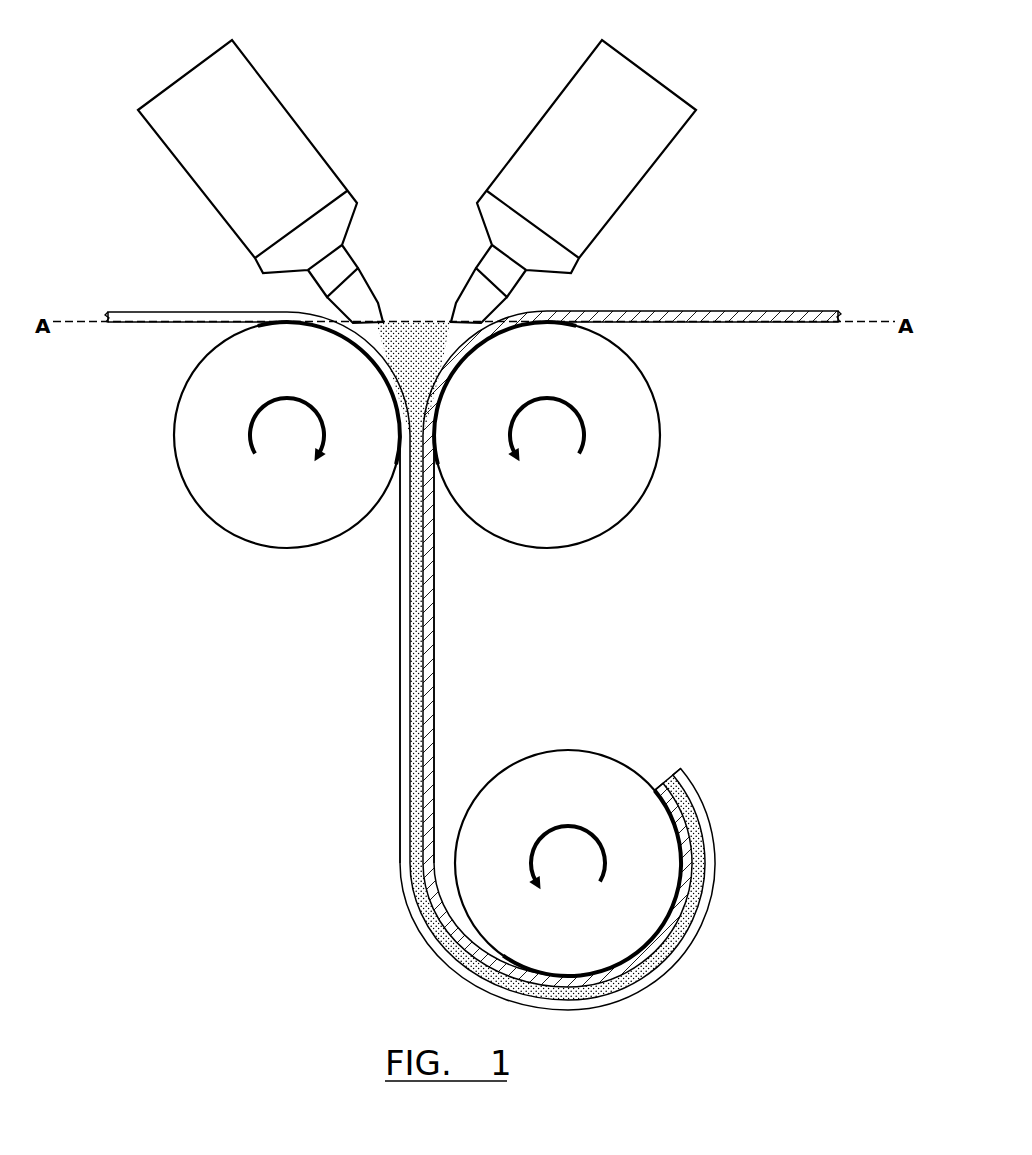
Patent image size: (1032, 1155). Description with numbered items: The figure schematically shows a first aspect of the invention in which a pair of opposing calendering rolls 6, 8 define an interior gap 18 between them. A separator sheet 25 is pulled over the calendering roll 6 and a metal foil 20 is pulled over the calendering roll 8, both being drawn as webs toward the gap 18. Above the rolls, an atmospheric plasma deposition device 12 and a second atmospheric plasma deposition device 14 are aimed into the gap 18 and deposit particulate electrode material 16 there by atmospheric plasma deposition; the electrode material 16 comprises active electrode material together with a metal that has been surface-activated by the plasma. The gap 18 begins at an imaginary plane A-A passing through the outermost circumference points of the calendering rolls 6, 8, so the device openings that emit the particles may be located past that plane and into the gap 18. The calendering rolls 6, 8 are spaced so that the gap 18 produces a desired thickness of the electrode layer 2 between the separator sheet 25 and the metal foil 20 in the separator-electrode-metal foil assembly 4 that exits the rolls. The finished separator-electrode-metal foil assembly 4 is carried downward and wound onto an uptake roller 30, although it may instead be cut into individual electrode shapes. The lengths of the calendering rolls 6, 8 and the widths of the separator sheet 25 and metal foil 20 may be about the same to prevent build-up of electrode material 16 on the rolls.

The electrode layer 2 is at (676, 767).
The separator-electrode-metal foil assembly 4 is at (394, 651).
The calendering roll 6 is at (175, 460).
The calendering roll 8 is at (659, 460).
The atmospheric plasma deposition device 12 is at (297, 122).
The atmospheric plasma deposition device 14 is at (537, 122).
The electrode material 16 is at (418, 470).
The gap 18 is at (428, 357).
The metal foil 20 is at (762, 311).
The separator sheet 25 is at (163, 311).
The uptake roller 30 is at (572, 751).